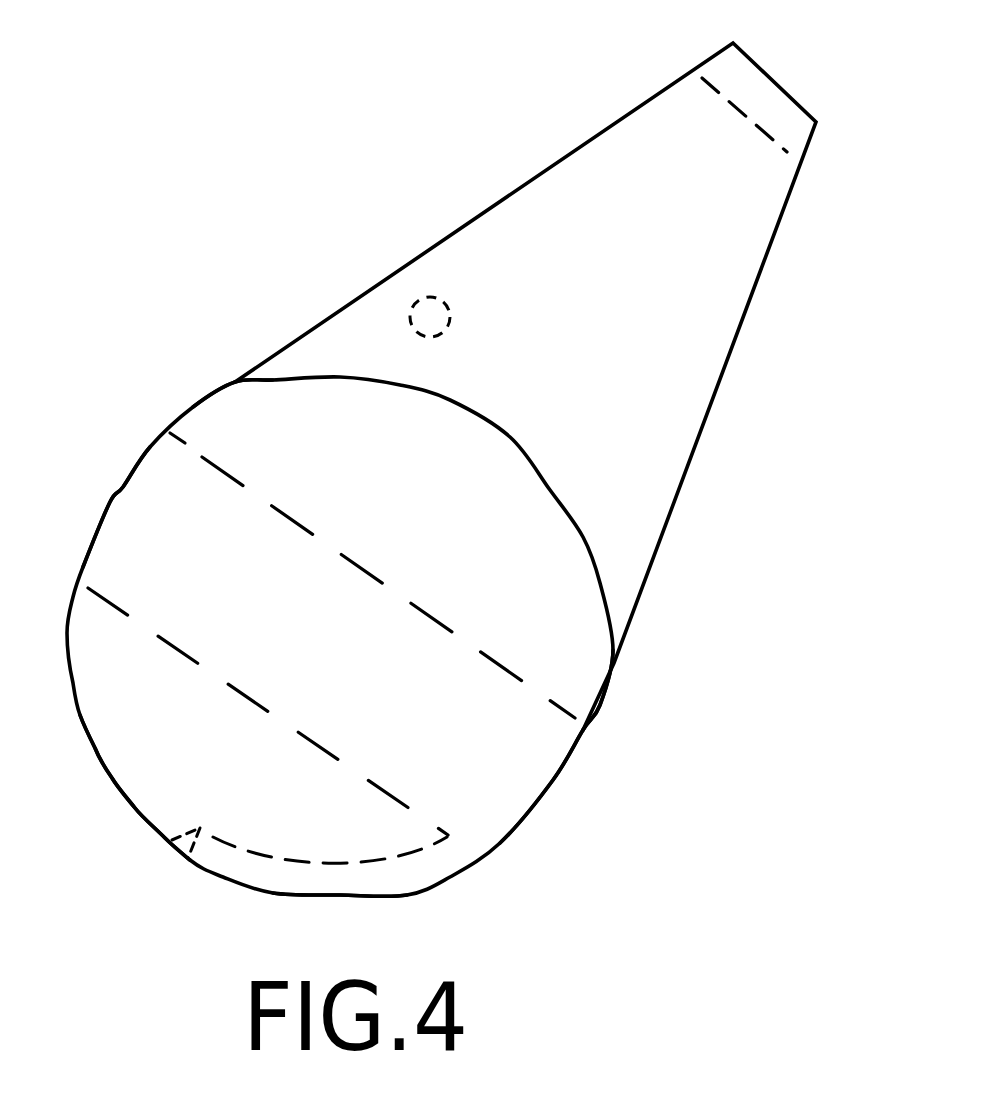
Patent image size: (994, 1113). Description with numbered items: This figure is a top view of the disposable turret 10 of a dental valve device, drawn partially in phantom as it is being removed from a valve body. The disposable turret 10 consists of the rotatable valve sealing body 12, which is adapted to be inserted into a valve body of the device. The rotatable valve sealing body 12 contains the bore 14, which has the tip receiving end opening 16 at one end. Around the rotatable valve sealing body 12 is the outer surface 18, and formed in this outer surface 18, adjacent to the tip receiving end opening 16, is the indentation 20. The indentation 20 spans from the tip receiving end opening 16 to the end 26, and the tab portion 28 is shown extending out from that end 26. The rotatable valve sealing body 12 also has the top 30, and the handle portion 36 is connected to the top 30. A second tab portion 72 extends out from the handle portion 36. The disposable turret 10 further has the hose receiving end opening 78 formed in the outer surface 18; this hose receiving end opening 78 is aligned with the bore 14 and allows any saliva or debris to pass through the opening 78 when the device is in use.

The disposable turret 10 is at (434, 486).
The rotatable valve sealing body 12 is at (112, 862).
The bore 14 is at (378, 637).
The tip receiving end opening 16 is at (553, 780).
The outer surface 18 is at (607, 690).
The indentation 20 is at (318, 883).
The end 26 is at (182, 828).
The tab portion 28 is at (197, 830).
The top 30 is at (252, 432).
The handle portion 36 is at (632, 165).
The tab portion 72 is at (427, 308).
The hose receiving end opening 78 is at (112, 502).